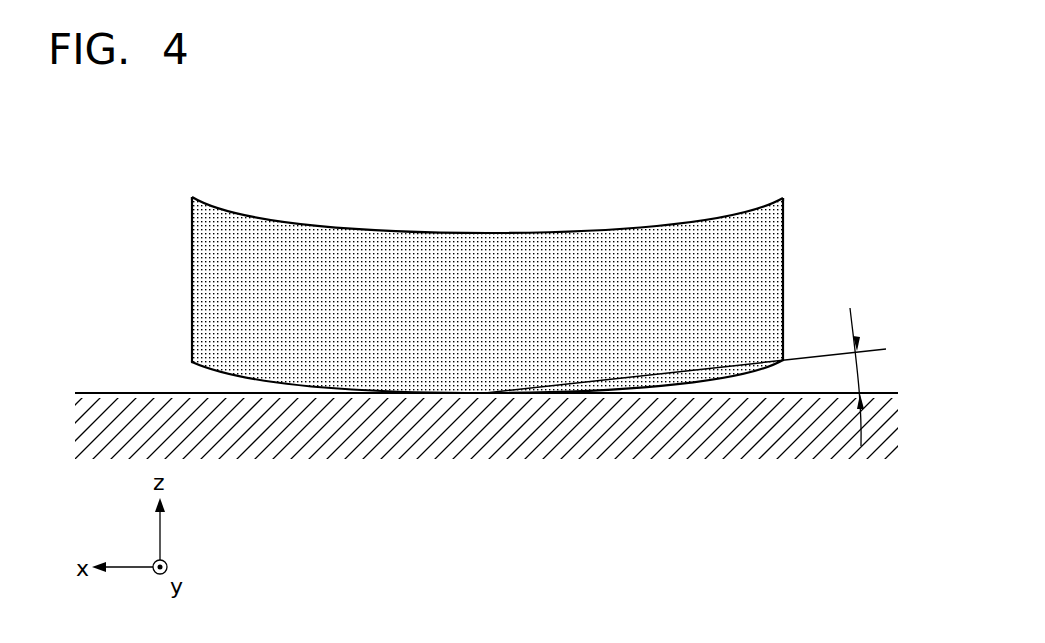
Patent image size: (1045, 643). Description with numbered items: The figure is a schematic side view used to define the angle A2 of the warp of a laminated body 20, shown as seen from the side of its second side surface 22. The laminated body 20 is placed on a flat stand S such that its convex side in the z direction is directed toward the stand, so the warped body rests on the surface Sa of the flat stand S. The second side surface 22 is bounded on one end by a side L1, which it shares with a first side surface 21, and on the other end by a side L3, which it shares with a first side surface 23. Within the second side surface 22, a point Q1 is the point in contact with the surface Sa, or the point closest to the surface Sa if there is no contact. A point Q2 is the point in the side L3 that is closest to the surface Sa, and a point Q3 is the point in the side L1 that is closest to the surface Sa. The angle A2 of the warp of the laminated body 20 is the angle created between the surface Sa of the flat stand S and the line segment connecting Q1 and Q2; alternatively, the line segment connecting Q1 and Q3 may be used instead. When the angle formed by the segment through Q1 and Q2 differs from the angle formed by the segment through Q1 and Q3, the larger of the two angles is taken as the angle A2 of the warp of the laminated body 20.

The laminated body 20 is at (531, 295).
The first side surface 21 is at (192, 249).
The second side surface 22 is at (250, 302).
The first side surface 23 is at (783, 250).
The side L1 is at (192, 197).
The side L3 is at (783, 198).
The point Q1 is at (485, 394).
The point Q2 is at (783, 361).
The point Q3 is at (192, 363).
The angle of the warp A2 is at (874, 377).
The flat stand S is at (878, 427).
The surface Sa is at (98, 392).